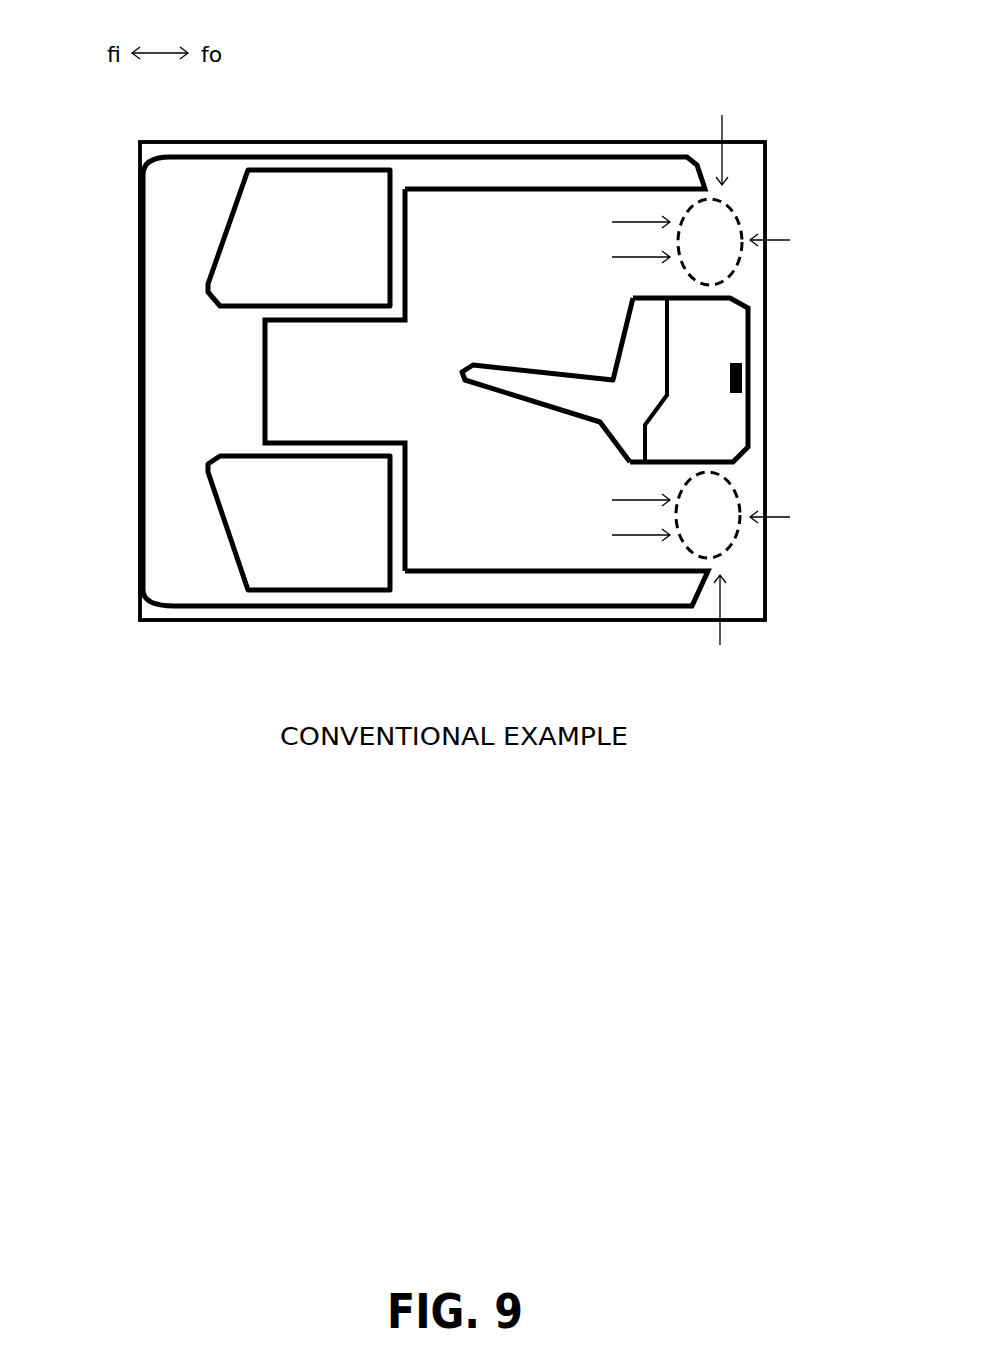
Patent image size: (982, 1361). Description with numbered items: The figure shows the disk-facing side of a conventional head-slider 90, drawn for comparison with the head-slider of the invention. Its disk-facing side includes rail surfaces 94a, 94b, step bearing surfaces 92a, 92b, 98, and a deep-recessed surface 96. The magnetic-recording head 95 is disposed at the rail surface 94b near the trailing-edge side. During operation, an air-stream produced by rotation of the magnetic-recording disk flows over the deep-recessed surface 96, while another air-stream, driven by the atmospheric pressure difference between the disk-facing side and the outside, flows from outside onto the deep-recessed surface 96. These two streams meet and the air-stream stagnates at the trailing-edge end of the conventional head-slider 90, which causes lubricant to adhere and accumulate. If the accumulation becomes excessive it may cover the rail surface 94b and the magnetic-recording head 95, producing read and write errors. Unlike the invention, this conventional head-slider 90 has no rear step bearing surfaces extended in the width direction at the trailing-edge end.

The conventional head-slider 90 is at (688, 101).
The step bearing surface 92a is at (175, 389).
The step bearing surface 92b is at (540, 383).
The rail surface 94a is at (322, 195).
The rail surface 94b is at (708, 340).
The magnetic-recording head 95 is at (742, 373).
The deep-recessed surface 96 is at (525, 540).
The step bearing surface 98 is at (568, 172).